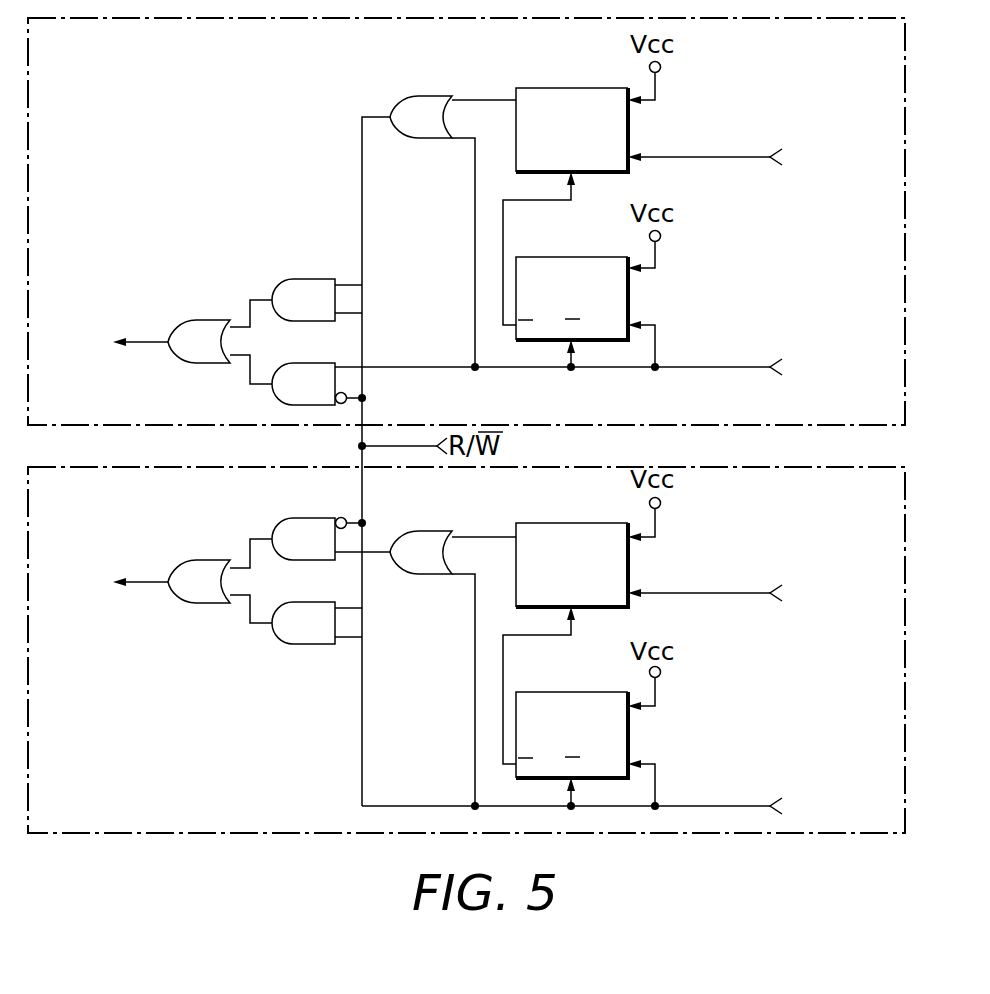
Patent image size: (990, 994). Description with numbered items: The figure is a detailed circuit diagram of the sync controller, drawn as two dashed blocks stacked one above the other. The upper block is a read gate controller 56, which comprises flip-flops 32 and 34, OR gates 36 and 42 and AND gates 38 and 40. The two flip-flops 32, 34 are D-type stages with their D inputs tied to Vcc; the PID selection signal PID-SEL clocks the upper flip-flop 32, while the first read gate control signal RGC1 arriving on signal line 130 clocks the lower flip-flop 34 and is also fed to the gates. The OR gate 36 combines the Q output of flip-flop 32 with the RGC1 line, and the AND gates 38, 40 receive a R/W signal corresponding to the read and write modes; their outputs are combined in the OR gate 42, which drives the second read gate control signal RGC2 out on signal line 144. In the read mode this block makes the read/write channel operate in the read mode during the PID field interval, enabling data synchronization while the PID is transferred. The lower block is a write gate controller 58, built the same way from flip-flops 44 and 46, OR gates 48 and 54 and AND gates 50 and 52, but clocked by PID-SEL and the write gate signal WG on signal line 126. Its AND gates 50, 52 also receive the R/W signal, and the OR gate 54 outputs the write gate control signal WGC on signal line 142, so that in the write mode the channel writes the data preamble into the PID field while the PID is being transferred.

The flip-flop 32 is at (570, 88).
The flip-flop 34 is at (570, 257).
The OR gate 36 is at (428, 96).
The AND gate 38 is at (306, 279).
The AND gate 40 is at (306, 363).
The OR gate 42 is at (198, 320).
The flip-flop 44 is at (570, 523).
The flip-flop 46 is at (570, 692).
The OR gate 48 is at (430, 531).
The AND gate 50 is at (306, 518).
The AND gate 52 is at (306, 602).
The OR gate 54 is at (198, 560).
The read gate controller 56 is at (905, 218).
The write gate controller 58 is at (905, 648).
The signal line 126 is at (708, 806).
The signal line 130 is at (708, 367).
The signal line 142 is at (130, 582).
The signal line 144 is at (130, 342).